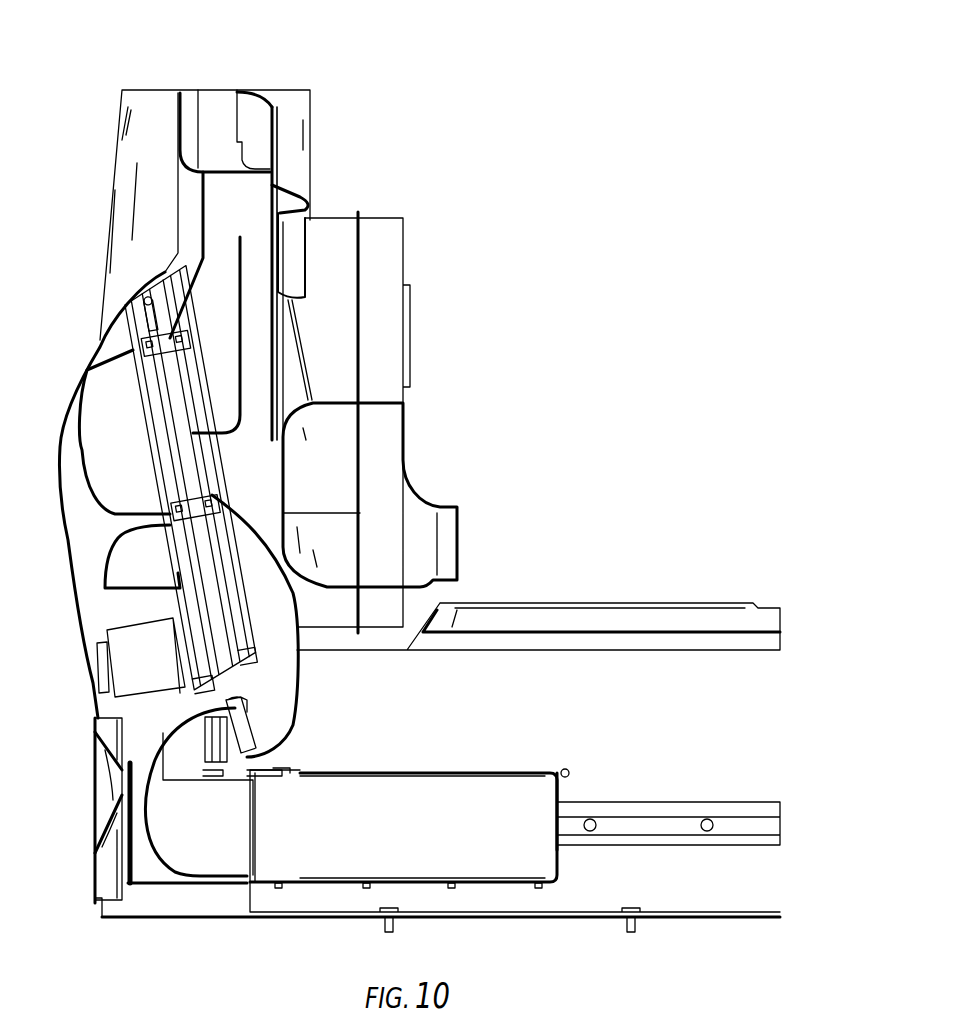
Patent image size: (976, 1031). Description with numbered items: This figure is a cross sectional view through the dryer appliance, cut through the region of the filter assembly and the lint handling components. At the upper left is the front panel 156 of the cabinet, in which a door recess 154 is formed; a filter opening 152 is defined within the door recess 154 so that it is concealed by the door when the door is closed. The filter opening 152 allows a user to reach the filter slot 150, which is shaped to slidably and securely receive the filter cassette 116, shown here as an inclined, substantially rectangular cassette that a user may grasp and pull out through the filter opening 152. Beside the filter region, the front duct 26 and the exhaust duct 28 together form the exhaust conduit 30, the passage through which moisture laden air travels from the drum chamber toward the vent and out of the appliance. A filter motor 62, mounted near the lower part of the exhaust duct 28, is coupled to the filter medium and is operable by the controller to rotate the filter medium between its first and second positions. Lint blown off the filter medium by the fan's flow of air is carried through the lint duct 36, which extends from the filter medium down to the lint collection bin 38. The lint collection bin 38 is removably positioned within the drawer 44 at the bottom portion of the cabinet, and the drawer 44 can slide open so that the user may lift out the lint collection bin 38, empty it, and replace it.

The front duct 26 is at (255, 320).
The exhaust duct 28 is at (100, 447).
The exhaust conduit 30 is at (255, 258).
The lint duct 36 is at (278, 590).
The lint collection bin 38 is at (375, 815).
The drawer 44 is at (115, 815).
The filter motor 62 is at (138, 667).
The filter cassette 116 is at (178, 465).
The filter slot 150 is at (125, 395).
The filter opening 152 is at (137, 278).
The door recess 154 is at (168, 142).
The front panel 156 is at (141, 98).